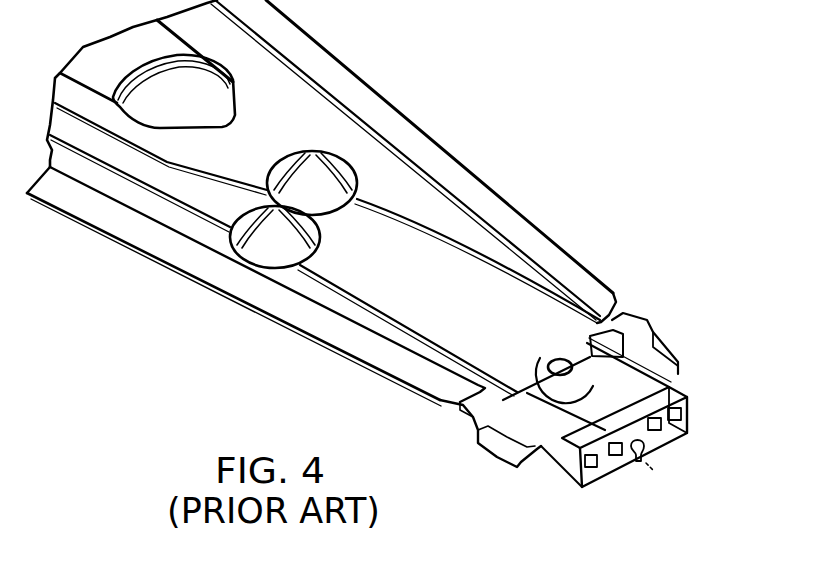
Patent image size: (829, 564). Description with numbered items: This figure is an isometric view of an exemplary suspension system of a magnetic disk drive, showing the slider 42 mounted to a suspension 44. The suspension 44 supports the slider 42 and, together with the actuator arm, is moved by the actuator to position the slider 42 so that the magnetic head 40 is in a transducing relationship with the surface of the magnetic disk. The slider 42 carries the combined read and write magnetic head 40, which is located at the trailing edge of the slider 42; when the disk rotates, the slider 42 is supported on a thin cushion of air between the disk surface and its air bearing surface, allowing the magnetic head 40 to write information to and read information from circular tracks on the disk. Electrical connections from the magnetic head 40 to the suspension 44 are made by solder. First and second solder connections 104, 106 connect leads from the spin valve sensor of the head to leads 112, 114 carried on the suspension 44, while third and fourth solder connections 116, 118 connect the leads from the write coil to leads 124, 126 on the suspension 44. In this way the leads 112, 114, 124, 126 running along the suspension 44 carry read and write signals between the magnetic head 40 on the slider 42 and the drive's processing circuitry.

The suspension 44 is at (470, 156).
The lead 114 is at (518, 277).
The lead 126 is at (440, 229).
The lead 124 is at (358, 320).
The lead 112 is at (352, 289).
The slider 42 is at (528, 470).
The second solder connection 106 is at (685, 410).
The first solder connection 104 is at (580, 485).
The third solder connection 116 is at (609, 456).
The magnetic head 40 is at (653, 470).
The fourth solder connection 118 is at (662, 433).